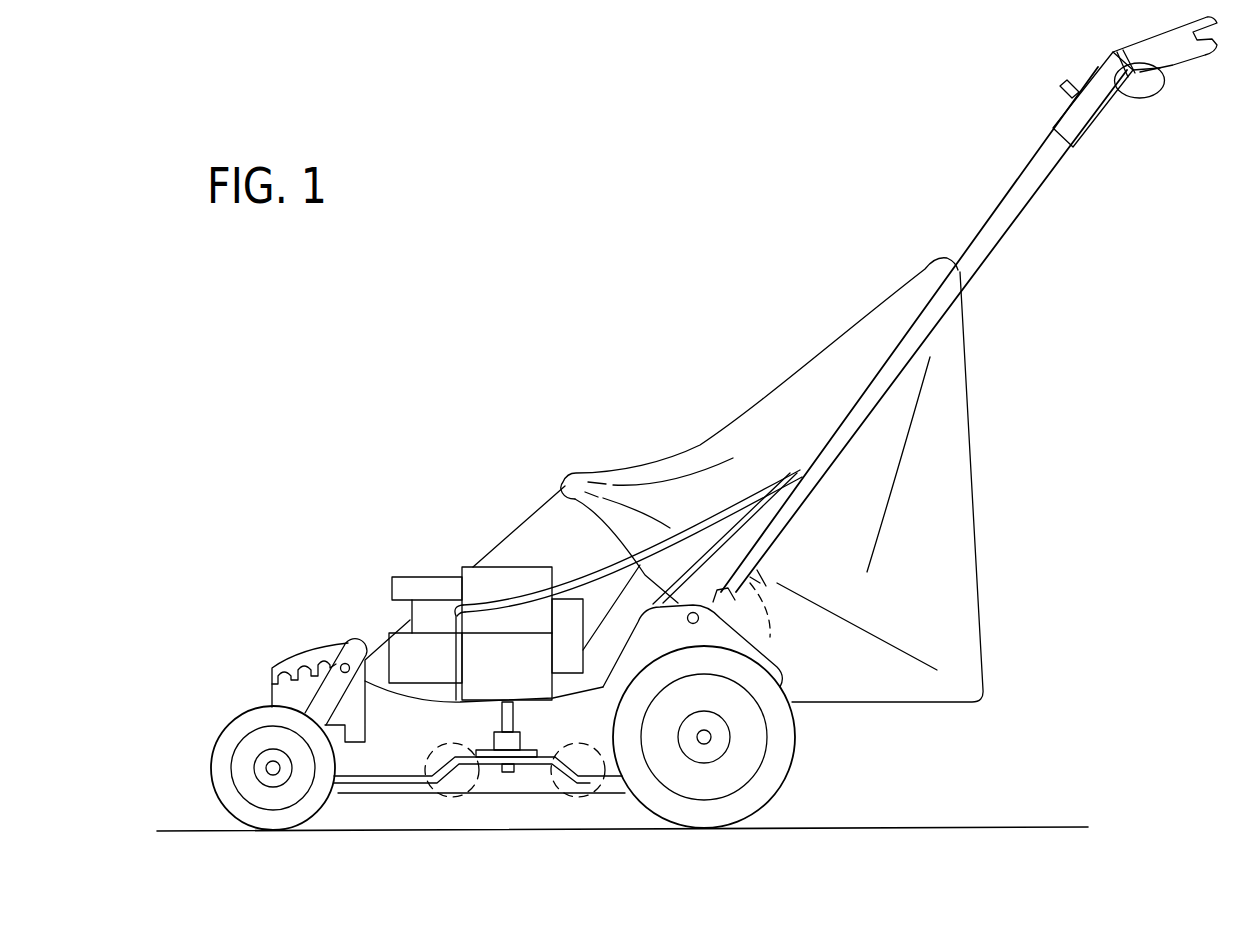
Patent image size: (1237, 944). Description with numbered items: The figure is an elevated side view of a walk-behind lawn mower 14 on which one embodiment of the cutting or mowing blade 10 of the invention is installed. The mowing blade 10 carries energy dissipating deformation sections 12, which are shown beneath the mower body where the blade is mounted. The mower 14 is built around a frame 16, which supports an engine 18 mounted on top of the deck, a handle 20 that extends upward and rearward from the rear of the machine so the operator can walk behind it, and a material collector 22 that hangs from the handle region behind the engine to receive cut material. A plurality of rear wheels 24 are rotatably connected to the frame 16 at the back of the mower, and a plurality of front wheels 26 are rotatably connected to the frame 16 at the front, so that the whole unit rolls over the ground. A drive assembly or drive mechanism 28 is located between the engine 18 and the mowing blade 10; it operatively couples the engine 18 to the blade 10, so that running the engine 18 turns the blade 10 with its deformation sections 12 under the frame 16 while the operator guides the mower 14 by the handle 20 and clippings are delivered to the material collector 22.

The mowing blade 10 is at (372, 773).
The energy dissipating deformation sections 12 is at (553, 778).
The walk-behind lawn mower 14 is at (547, 362).
The frame 16 is at (398, 797).
The engine 18 is at (391, 572).
The handle 20 is at (1023, 213).
The material collector 22 is at (972, 415).
The rear wheels 24 is at (798, 744).
The front wheels 26 is at (233, 715).
The drive mechanism 28 is at (536, 721).